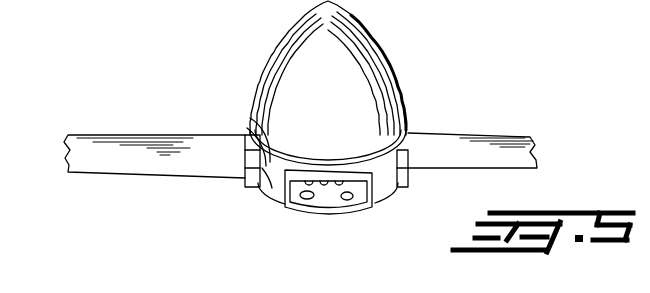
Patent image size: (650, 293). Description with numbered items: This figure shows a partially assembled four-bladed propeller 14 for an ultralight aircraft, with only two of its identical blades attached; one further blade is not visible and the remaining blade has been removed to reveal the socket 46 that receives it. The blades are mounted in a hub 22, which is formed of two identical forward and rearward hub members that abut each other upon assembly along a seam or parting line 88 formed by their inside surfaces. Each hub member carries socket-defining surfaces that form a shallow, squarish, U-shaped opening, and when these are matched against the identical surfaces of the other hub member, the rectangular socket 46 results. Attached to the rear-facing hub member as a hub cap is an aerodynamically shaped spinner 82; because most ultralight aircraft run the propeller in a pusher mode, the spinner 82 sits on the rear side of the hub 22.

The four-bladed propeller 14 is at (392, 37).
The hub 22 is at (383, 215).
The socket 46 is at (325, 196).
The spinner 82 is at (397, 73).
The parting line 88 is at (397, 191).